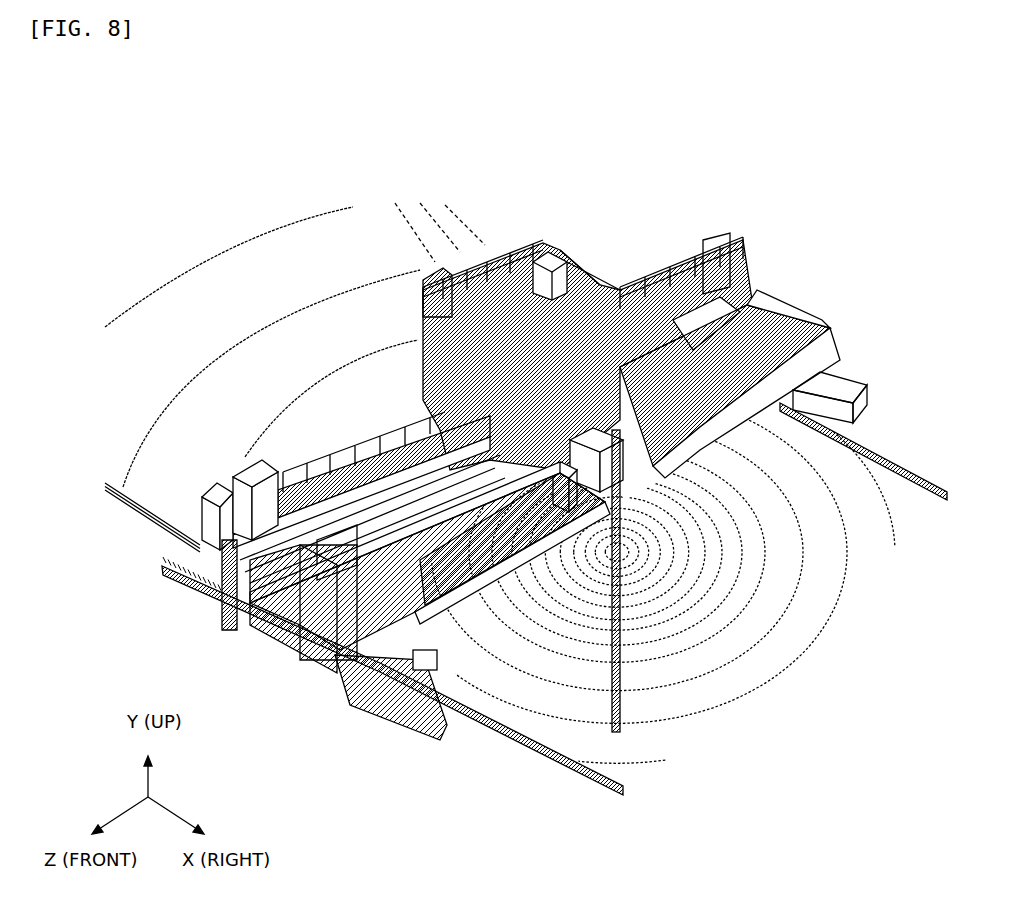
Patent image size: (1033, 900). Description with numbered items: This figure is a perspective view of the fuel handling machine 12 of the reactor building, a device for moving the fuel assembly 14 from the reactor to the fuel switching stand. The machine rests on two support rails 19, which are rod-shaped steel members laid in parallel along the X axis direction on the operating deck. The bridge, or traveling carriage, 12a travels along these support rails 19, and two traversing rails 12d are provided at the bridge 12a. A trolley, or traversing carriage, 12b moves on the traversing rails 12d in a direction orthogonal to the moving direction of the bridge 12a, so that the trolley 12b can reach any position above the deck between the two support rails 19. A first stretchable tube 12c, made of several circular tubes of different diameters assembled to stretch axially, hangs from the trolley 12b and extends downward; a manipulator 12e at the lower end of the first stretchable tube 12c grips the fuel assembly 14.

The fuel handling machine 12 is at (526, 409).
The bridge (traveling carriage) 12a is at (779, 296).
The trolley (traversing carriage) 12b is at (433, 260).
The first stretchable tube 12c is at (650, 531).
The traversing rails 12d is at (263, 627).
The manipulator 12e is at (633, 619).
The fuel assembly 14 is at (640, 656).
The support rails 19 is at (549, 768).